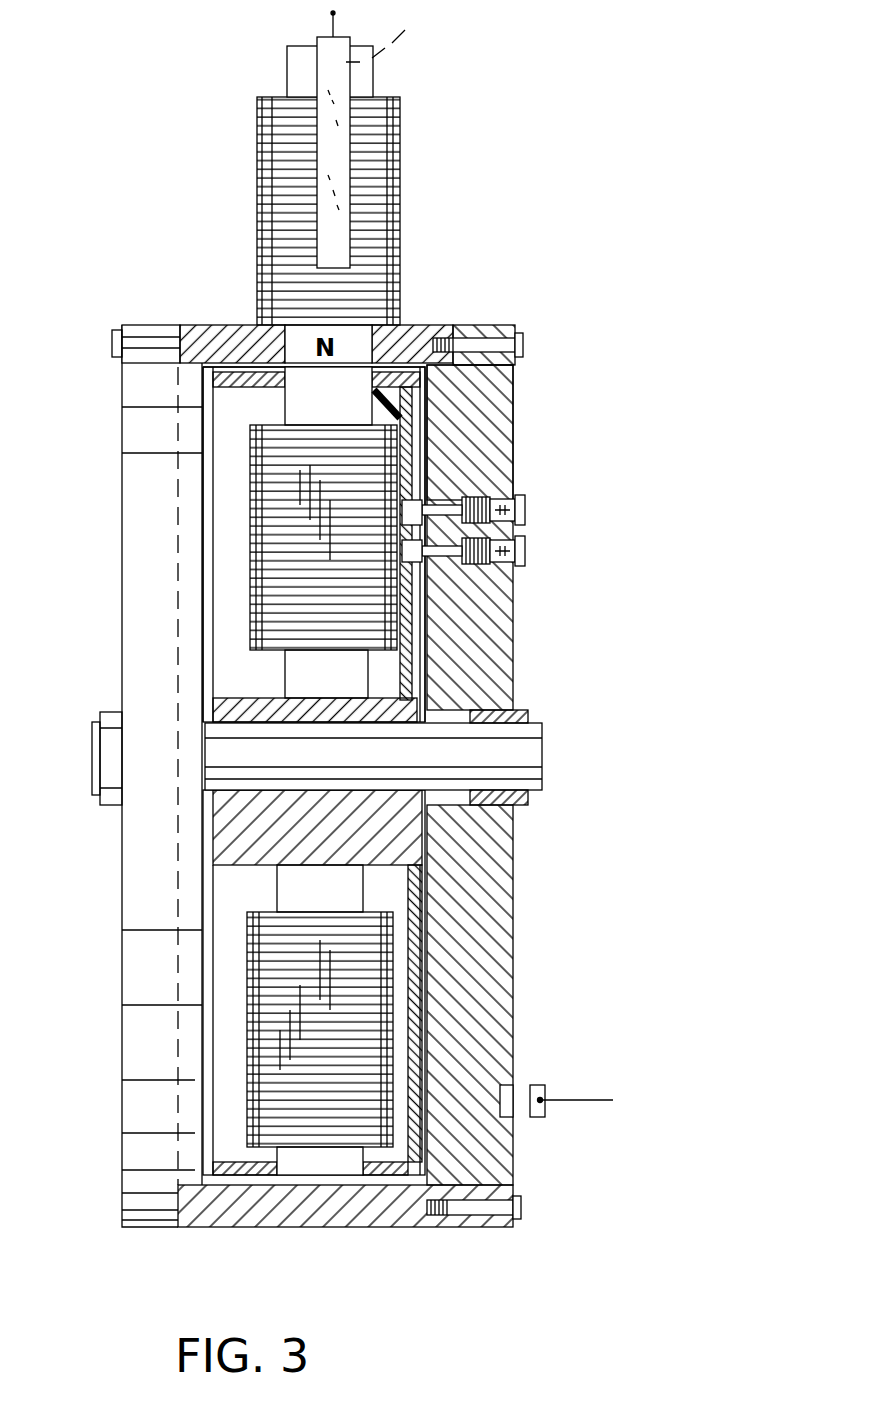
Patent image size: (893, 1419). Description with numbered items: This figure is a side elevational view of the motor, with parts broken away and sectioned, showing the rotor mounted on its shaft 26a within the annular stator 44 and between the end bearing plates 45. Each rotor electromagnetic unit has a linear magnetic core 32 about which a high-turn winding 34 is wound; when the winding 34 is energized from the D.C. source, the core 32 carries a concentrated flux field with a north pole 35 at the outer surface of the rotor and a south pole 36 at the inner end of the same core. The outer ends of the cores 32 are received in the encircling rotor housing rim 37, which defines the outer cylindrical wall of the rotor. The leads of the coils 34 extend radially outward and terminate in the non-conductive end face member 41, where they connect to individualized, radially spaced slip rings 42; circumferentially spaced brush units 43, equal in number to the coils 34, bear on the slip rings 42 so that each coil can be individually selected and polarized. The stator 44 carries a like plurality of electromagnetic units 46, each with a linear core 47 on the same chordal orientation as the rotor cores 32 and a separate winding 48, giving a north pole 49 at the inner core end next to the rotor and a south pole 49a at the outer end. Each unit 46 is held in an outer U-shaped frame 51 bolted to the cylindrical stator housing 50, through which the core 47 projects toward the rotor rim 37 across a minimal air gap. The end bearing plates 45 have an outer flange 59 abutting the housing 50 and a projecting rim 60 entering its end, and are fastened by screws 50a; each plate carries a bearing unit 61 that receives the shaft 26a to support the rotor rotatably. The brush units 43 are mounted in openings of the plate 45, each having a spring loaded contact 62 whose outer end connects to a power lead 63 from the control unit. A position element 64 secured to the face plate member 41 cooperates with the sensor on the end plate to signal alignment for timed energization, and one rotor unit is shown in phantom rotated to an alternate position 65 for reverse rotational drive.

The shaft 26a is at (533, 752).
The magnetic core 32 is at (290, 415).
The winding 34 is at (262, 595).
The north pole 35 is at (402, 363).
The south pole 36 is at (300, 672).
The rotor housing rim 37 is at (215, 374).
The end face member 41 is at (420, 430).
The slip rings 42 is at (440, 507).
The brush units 43 is at (460, 566).
The stator 44 is at (200, 318).
The end bearing plate 45 is at (130, 890).
The electromagnetic unit 46 is at (373, 211).
The linear core 47 is at (365, 78).
The winding 48 is at (385, 235).
The north pole 49 is at (417, 345).
The south pole 49a is at (399, 36).
The cylindrical housing 50 is at (243, 332).
The screws 50a is at (520, 340).
The U-shaped frame 51 is at (322, 83).
The outer flange 59 is at (490, 330).
The projecting rim 60 is at (443, 372).
The bearing unit 61 is at (520, 805).
The spring loaded contact 62 is at (467, 478).
The power lead 63 is at (516, 530).
The position element 64 is at (513, 1085).
The alternate position 65 is at (537, 1127).